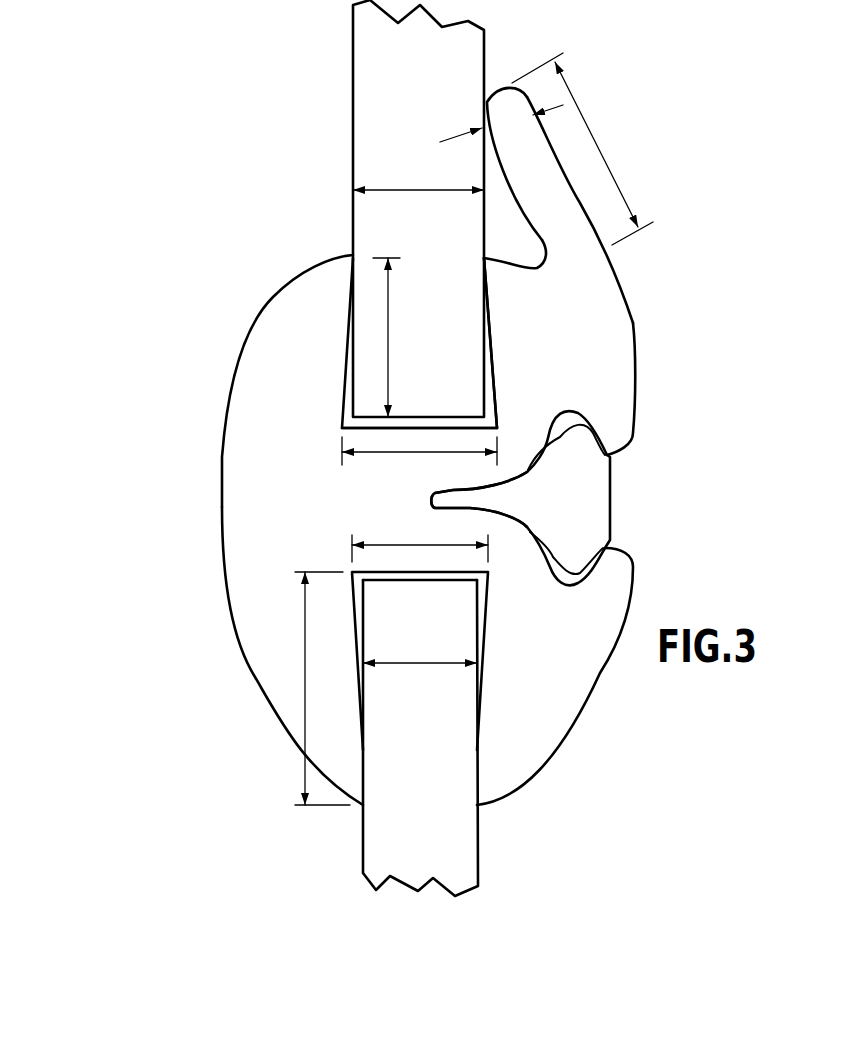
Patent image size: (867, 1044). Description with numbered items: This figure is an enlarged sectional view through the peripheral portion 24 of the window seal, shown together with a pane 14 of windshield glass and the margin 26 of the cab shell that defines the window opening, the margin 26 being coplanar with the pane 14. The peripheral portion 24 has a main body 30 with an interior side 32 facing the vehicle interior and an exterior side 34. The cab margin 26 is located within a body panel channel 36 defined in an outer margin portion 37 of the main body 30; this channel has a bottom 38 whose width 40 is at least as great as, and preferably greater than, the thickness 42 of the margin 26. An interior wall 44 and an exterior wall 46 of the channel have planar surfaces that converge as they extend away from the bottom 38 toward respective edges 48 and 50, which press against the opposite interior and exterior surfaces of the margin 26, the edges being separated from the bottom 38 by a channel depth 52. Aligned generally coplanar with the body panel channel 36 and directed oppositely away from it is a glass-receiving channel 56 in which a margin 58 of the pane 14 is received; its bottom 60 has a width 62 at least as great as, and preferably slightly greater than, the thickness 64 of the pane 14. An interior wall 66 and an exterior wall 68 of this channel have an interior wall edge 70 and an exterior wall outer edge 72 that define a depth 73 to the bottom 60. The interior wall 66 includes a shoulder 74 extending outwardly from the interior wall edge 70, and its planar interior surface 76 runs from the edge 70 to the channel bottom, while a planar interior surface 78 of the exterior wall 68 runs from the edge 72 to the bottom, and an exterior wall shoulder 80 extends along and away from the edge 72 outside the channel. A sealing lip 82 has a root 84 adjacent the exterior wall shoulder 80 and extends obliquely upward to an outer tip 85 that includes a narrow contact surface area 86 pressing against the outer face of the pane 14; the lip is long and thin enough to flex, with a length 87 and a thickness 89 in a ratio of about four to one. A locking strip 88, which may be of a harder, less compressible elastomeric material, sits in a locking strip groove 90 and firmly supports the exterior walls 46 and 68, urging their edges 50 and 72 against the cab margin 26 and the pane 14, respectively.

The pane 14 is at (352, 68).
The peripheral portion 24 is at (185, 570).
The margin 26 is at (440, 703).
The main body 30 is at (585, 703).
The interior side 32 is at (238, 638).
The exterior side 34 is at (633, 350).
The body panel channel 36 is at (490, 632).
The outer margin portion 37 is at (517, 790).
The bottom 38 is at (440, 578).
The width 40 is at (400, 545).
The thickness 42 is at (403, 660).
The interior wall 44 is at (272, 683).
The exterior wall 46 is at (532, 740).
The edge 48 is at (360, 807).
The edge 50 is at (477, 803).
The channel depth 52 is at (302, 717).
The glass-receiving channel 56 is at (353, 372).
The margin 58 is at (460, 352).
The bottom 60 is at (450, 425).
The width 62 is at (400, 455).
The thickness 64 is at (400, 185).
The interior wall 66 is at (285, 322).
The exterior wall 68 is at (505, 270).
The interior wall edge 70 is at (355, 255).
The exterior wall outer edge 72 is at (484, 258).
The depth 73 is at (390, 315).
The shoulder 74 is at (303, 273).
The planar interior surface 76 is at (353, 335).
The planar interior surface 78 is at (483, 345).
The exterior wall shoulder 80 is at (528, 262).
The sealing lip 82 is at (563, 182).
The root 84 is at (612, 263).
The outer tip 85 is at (505, 88).
The contact surface area 86 is at (486, 105).
The length 87 is at (583, 117).
The locking strip 88 is at (605, 497).
The thickness 89 is at (443, 140).
The locking strip groove 90 is at (503, 503).